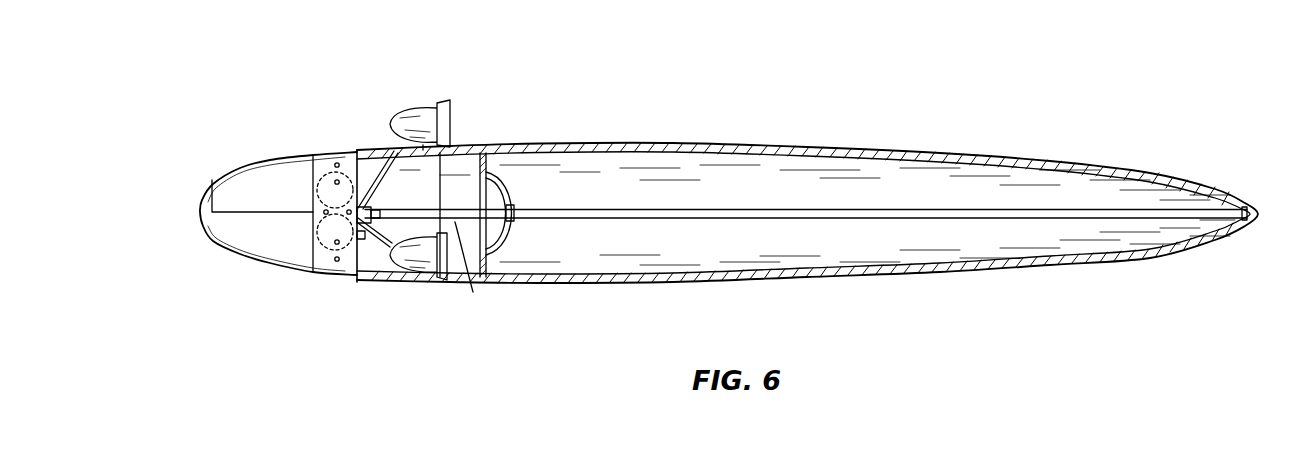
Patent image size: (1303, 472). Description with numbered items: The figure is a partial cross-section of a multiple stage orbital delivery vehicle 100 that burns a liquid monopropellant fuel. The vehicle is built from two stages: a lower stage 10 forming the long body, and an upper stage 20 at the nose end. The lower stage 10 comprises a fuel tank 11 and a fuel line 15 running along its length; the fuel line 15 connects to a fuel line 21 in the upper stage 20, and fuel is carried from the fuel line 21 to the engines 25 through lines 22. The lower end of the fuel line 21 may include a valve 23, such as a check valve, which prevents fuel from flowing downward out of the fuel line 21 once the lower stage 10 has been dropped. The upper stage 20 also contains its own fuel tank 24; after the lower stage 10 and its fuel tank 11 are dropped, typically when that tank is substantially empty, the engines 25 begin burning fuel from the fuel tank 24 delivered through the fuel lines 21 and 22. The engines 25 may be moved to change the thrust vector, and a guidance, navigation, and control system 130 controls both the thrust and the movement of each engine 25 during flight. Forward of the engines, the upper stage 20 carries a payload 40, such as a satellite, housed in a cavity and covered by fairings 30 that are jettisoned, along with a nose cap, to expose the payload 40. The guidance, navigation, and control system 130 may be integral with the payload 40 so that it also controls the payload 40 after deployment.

The multiple stage orbital delivery vehicle 100 is at (168, 78).
The lower stage 10 is at (973, 142).
The fuel tank 11 is at (1118, 195).
The fuel line 15 is at (852, 220).
The upper stage 20 is at (251, 156).
The fairings 30 is at (226, 192).
The payload 40 is at (325, 165).
The fuel lines 22 is at (380, 160).
The guidance, navigation, and control system 130 is at (366, 242).
The engines 25 is at (406, 108).
The fuel tank 24 is at (412, 202).
The valve 23 is at (514, 226).
The fuel line 21 is at (473, 283).